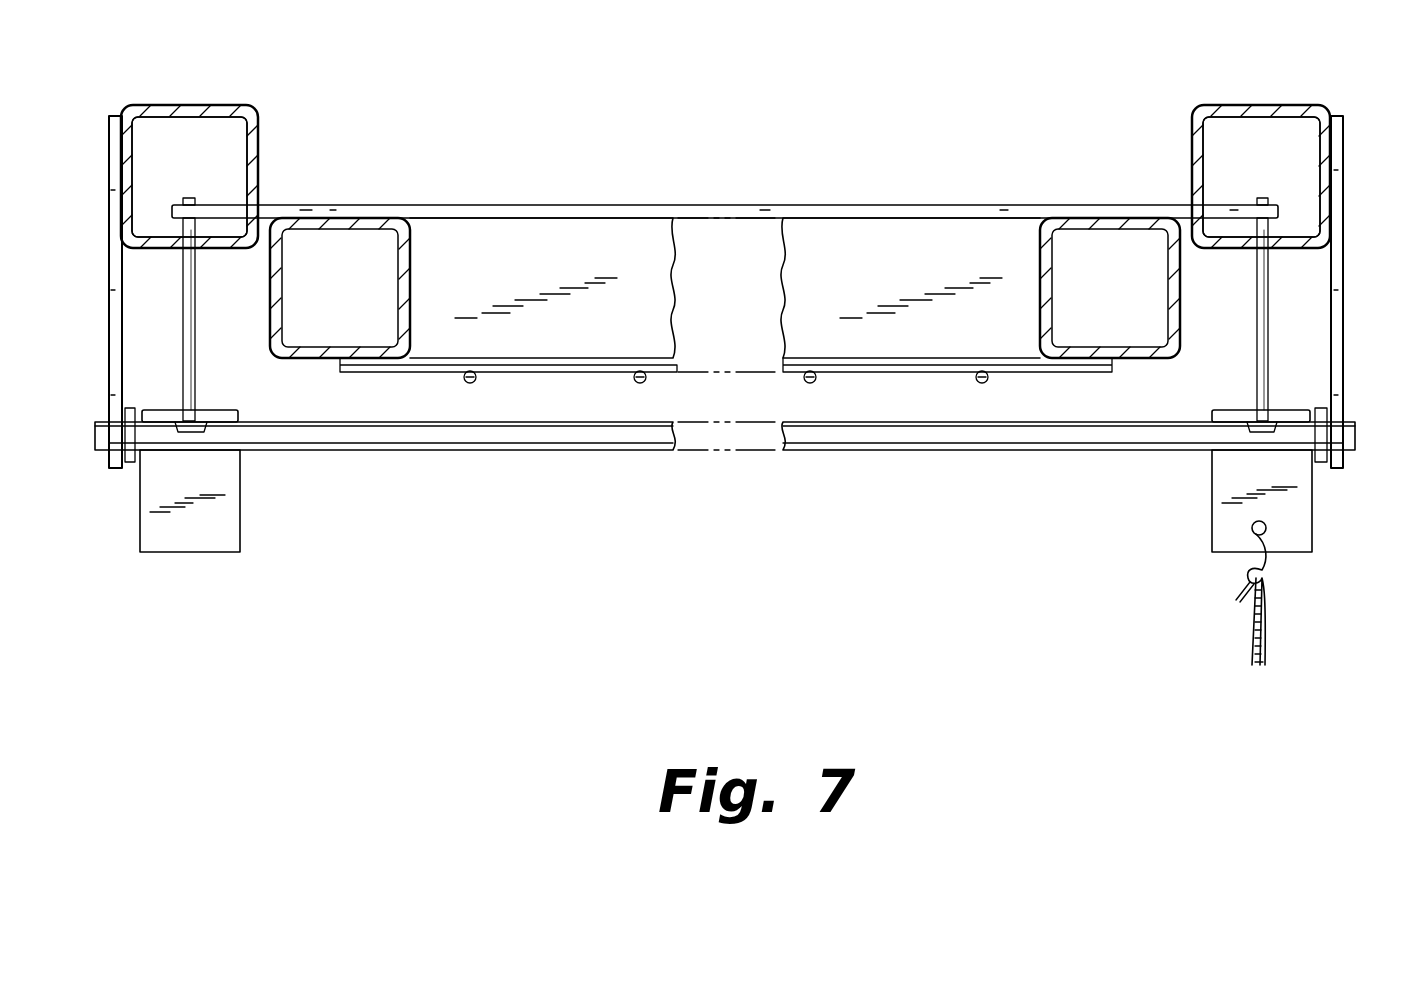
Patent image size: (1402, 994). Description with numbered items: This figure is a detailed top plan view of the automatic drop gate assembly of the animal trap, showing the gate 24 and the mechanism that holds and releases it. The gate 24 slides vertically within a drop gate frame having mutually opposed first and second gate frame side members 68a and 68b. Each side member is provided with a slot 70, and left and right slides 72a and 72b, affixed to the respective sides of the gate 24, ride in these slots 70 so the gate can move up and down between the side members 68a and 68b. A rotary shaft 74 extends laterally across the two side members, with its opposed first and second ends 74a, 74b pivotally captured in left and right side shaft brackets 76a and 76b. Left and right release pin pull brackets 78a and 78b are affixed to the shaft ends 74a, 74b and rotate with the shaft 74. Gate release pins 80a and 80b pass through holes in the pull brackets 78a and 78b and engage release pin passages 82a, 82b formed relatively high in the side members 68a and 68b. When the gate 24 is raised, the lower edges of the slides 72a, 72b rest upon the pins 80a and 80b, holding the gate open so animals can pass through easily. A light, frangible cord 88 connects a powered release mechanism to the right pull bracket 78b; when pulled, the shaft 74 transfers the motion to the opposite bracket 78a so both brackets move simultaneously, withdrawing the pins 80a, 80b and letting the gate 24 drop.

The automatic drop gate 24 is at (820, 218).
The first gate frame side member 68a is at (157, 103).
The second gate frame side member 68b is at (1252, 103).
The slots 70 is at (268, 205).
The left slide 72a is at (207, 205).
The right slide 72b is at (1240, 205).
The rotary shaft 74 is at (725, 470).
The first end of rotary shaft 74a is at (262, 455).
The second end of rotary shaft 74b is at (1160, 455).
The left side shaft bracket 76a is at (108, 327).
The right side shaft bracket 76b is at (1343, 263).
The left release pin pull bracket 78a is at (230, 552).
The right release pin pull bracket 78b is at (1300, 552).
The left gate release pin 80a is at (198, 372).
The right gate release pin 80b is at (1268, 322).
The left release pin passage 82a is at (178, 248).
The right release pin passage 82b is at (1255, 248).
The cord 88 is at (1255, 635).